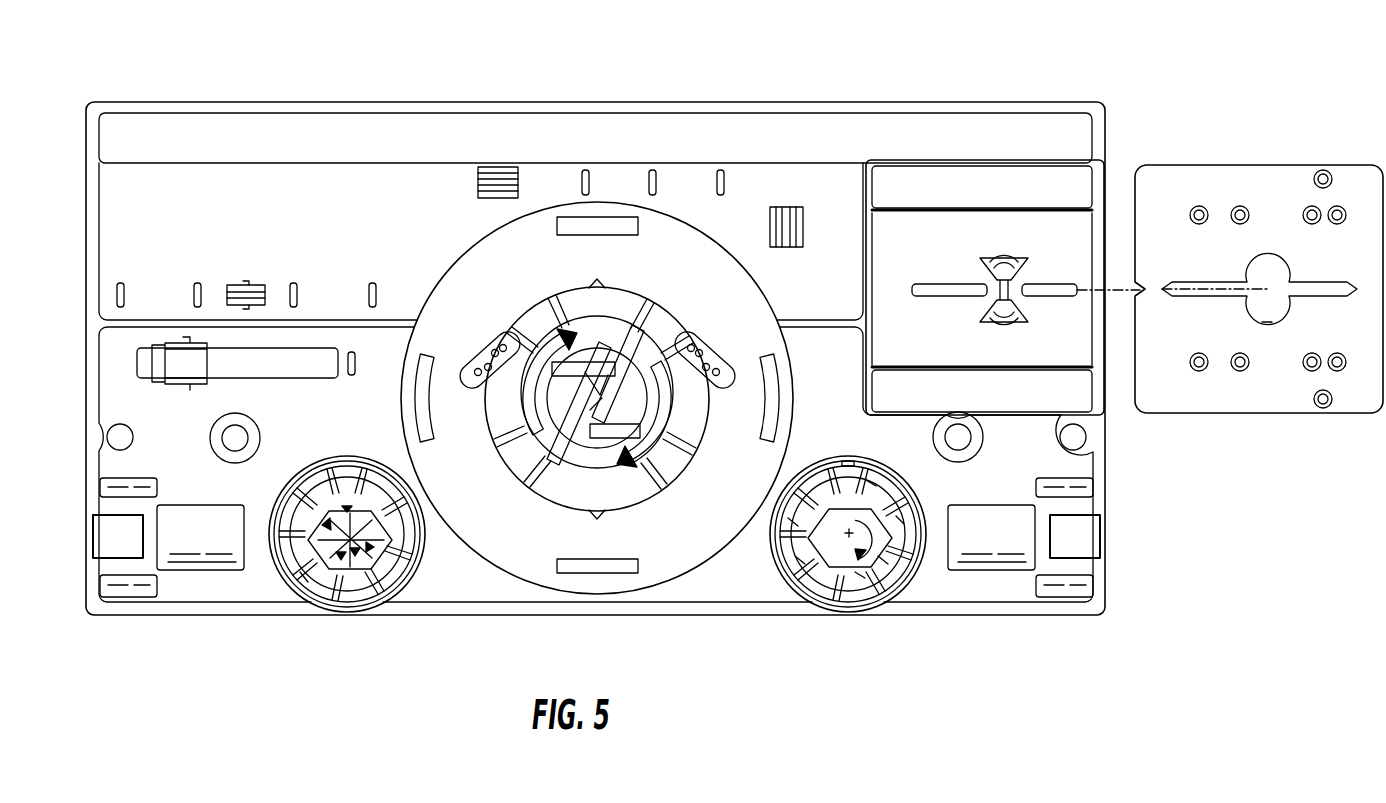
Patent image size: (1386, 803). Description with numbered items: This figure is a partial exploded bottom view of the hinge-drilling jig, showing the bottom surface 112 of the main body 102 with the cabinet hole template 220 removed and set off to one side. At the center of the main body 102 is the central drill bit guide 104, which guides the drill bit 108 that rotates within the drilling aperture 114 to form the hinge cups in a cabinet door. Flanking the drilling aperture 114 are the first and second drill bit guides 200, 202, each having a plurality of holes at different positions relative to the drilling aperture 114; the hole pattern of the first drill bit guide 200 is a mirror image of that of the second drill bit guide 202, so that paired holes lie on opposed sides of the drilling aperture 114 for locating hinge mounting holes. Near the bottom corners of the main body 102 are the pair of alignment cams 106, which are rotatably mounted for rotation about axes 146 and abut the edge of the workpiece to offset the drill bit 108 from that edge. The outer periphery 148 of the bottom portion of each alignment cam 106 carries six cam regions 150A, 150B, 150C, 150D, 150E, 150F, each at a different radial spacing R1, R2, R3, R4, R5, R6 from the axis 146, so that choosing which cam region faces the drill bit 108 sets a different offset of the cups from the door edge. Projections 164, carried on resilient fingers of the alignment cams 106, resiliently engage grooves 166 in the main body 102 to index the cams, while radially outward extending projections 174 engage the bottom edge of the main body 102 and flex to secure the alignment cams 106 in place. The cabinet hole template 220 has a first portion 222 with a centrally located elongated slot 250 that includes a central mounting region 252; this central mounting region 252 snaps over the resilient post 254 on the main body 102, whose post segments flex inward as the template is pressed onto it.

The main body 102 is at (835, 132).
The central drill bit guide 104 is at (549, 310).
The alignment cams 106 is at (323, 578).
The drill bit 108 is at (632, 345).
The bottom surface 112 is at (1005, 100).
The drilling aperture 114 is at (612, 308).
The axes 146 is at (370, 515).
The outer periphery 148 is at (393, 563).
The cam region 150A is at (873, 483).
The cam region 150B is at (900, 520).
The cam region 150C is at (883, 560).
The cam region 150D is at (860, 575).
The cam region 150E is at (800, 560).
The cam region 150F is at (793, 522).
The projections 164 is at (845, 515).
The grooves 166 is at (847, 468).
The radially outward extending projections 174 is at (896, 488).
The first drill bit guide 200 is at (708, 338).
The second drill bit guide 202 is at (484, 350).
The cabinet hole template 220 is at (1233, 152).
The first portion 222 is at (1240, 392).
The elongated slot 250 is at (1266, 262).
The central mounting region 252 is at (1265, 341).
The resilient post 254 is at (1007, 326).
The radial spacing R1 is at (345, 512).
The radial spacing R2 is at (372, 547).
The radial spacing R3 is at (355, 556).
The radial spacing R4 is at (341, 560).
The radial spacing R5 is at (305, 577).
The radial spacing R6 is at (322, 525).